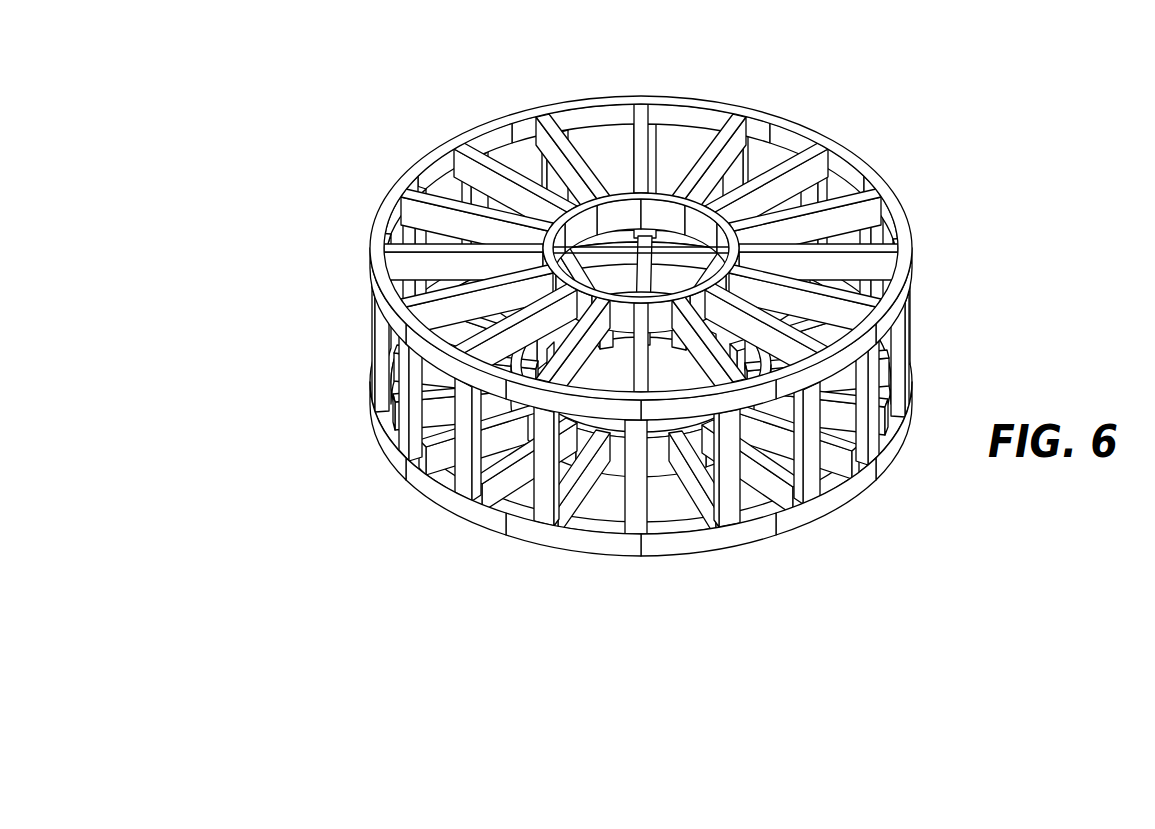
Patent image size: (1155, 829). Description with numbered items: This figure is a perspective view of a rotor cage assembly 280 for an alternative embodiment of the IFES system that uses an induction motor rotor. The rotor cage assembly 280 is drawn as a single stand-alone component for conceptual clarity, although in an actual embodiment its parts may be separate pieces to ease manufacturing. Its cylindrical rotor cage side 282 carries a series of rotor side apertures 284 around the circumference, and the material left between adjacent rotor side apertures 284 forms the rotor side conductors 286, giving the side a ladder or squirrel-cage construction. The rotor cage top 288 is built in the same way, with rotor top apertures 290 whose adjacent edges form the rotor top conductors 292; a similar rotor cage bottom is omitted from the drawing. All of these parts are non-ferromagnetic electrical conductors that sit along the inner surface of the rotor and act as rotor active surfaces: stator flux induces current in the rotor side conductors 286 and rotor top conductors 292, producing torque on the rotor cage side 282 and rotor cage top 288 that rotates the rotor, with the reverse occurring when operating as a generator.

The rotor cage assembly 280 is at (637, 349).
The rotor cage side 282 is at (370, 358).
The rotor side apertures 284 is at (437, 452).
The rotor side conductors 286 is at (540, 518).
The rotor cage top 288 is at (783, 117).
The rotor top aperture 290 is at (873, 235).
The rotor top conductors 292 is at (897, 250).